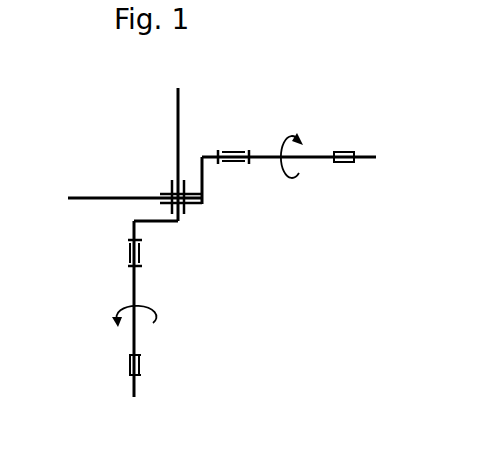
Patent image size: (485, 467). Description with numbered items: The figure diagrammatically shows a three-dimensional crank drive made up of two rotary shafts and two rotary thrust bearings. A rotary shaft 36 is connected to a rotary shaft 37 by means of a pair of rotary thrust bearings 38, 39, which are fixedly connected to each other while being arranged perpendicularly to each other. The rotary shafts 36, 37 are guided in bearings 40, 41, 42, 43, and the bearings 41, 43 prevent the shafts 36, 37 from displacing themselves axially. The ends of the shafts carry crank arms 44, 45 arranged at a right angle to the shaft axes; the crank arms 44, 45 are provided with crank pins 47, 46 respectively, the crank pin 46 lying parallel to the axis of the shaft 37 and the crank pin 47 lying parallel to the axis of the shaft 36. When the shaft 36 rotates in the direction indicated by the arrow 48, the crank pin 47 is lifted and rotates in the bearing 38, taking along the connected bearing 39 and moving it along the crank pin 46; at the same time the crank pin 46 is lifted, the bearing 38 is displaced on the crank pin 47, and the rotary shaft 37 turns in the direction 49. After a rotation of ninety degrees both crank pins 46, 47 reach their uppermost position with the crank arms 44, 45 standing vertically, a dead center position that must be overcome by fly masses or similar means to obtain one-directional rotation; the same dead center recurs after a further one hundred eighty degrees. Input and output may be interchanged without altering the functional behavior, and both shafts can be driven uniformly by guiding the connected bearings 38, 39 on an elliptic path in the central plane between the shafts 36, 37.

The rotary shaft 36 is at (370, 160).
The rotary shaft 37 is at (134, 392).
The rotary thrust bearing 38 is at (160, 193).
The rotary thrust bearing 39 is at (186, 210).
The bearing 40 is at (340, 150).
The bearing 41 is at (232, 150).
The bearing 42 is at (141, 365).
The bearing 43 is at (128, 252).
The crank arm 44 is at (203, 180).
The crank arm 45 is at (158, 223).
The crank pin 46 is at (177, 140).
The crank pin 47 is at (100, 197).
The direction of rotation arrow 48 is at (291, 136).
The direction of rotation 49 is at (113, 316).